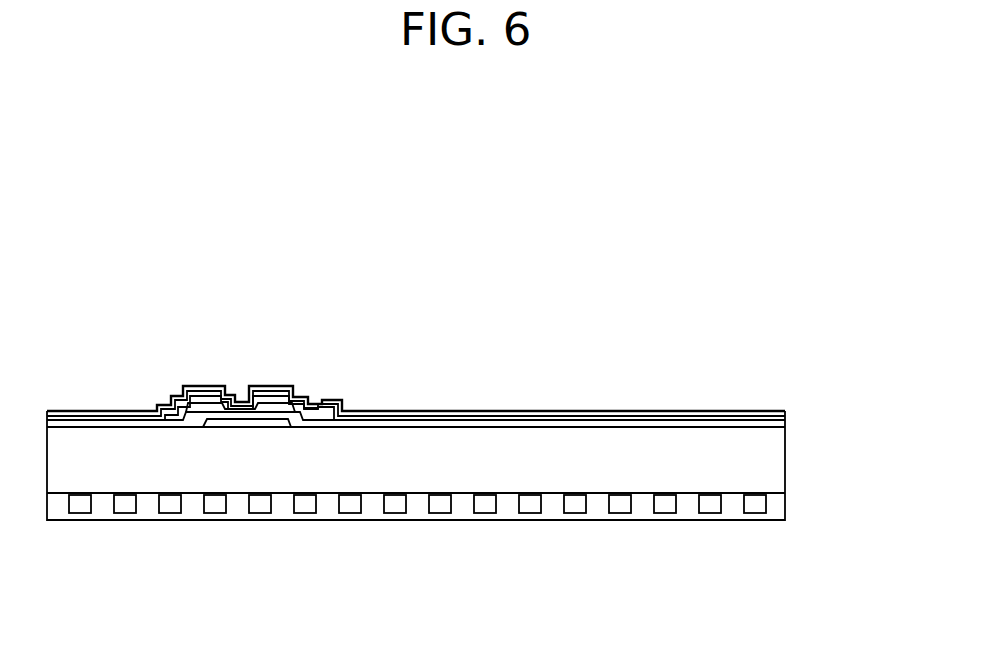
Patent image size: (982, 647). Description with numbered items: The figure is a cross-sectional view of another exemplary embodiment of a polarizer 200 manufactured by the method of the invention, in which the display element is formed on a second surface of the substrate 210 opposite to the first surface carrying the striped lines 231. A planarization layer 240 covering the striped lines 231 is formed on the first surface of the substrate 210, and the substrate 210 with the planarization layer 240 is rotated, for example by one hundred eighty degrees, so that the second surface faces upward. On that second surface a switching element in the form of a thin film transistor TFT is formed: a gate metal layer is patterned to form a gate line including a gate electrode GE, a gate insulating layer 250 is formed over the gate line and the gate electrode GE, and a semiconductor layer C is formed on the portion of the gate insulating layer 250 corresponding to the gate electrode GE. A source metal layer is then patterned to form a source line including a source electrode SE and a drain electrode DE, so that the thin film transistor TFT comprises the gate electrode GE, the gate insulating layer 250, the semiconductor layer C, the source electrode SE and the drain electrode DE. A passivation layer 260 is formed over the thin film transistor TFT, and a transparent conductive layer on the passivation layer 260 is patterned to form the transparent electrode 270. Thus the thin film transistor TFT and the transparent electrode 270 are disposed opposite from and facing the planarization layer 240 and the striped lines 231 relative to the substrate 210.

The polarizer 200 is at (458, 248).
The substrate 210 is at (785, 458).
The planarization layer 240 is at (778, 502).
The striped lines 231 is at (437, 500).
The gate insulating layer 250 is at (785, 420).
The passivation layer 260 is at (785, 416).
The transparent electrode 270 is at (785, 411).
The thin film transistor TFT is at (248, 510).
The gate electrode GE is at (240, 425).
The source electrode SE is at (167, 418).
The drain electrode DE is at (298, 488).
The semiconductor layer C is at (270, 402).